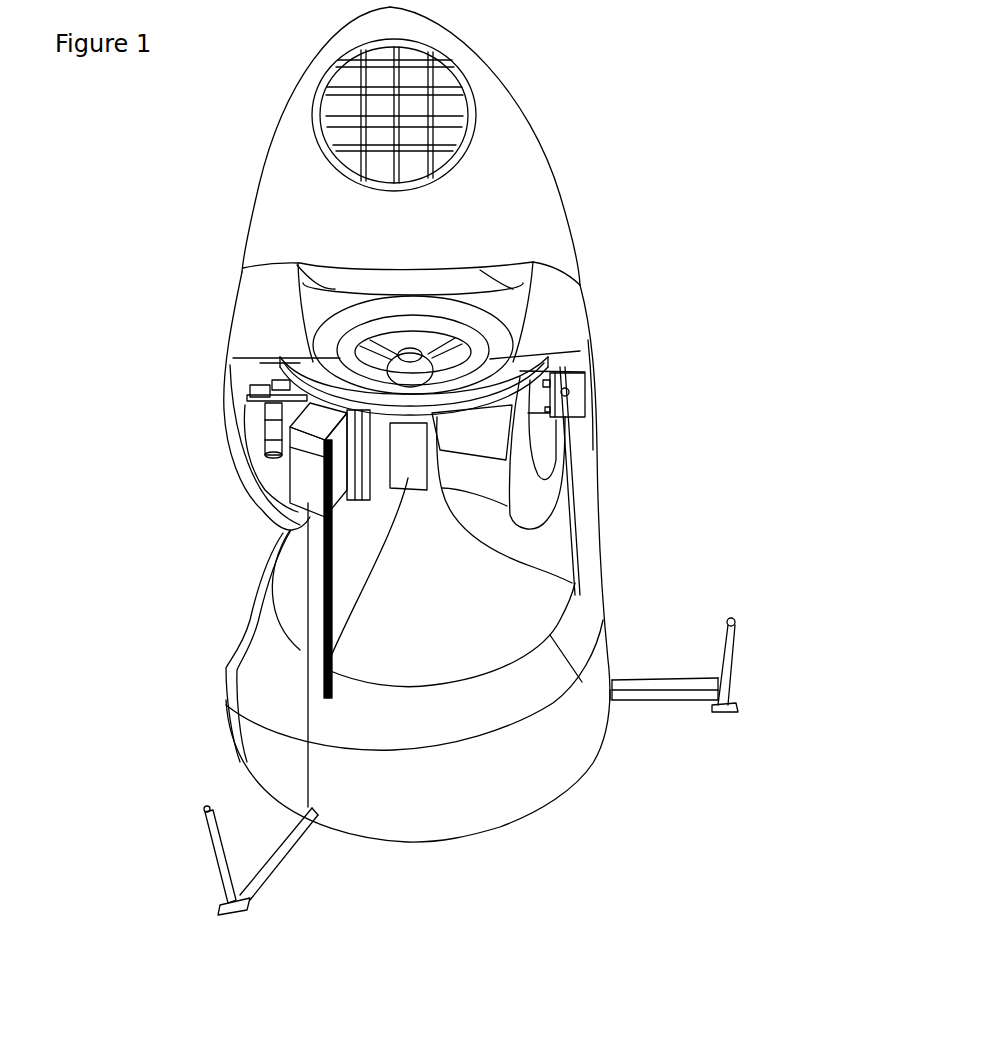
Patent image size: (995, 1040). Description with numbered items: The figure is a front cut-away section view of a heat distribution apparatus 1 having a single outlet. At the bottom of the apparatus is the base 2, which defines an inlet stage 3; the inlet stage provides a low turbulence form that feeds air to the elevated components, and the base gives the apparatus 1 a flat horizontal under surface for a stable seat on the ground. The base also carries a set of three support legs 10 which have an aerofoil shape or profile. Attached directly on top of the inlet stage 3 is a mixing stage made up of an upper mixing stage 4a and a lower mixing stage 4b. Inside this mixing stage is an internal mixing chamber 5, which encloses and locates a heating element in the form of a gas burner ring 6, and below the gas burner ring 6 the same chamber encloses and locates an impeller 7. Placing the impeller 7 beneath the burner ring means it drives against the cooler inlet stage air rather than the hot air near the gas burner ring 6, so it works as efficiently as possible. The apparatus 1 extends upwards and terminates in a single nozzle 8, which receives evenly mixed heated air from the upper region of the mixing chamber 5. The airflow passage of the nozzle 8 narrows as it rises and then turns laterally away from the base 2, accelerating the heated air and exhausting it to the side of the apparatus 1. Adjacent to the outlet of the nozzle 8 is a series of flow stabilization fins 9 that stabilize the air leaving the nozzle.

The heat distribution apparatus 1 is at (732, 173).
The base 2 is at (549, 786).
The inlet stage 3 is at (262, 533).
The upper mixing stage 4a is at (225, 310).
The lower mixing stage 4b is at (215, 435).
The mixing chamber 5 is at (480, 323).
The gas burner ring 6 is at (558, 355).
The impeller 7 is at (483, 440).
The nozzle 8 is at (282, 200).
The flow stabilization fins 9 is at (400, 57).
The support legs 10 is at (588, 537).